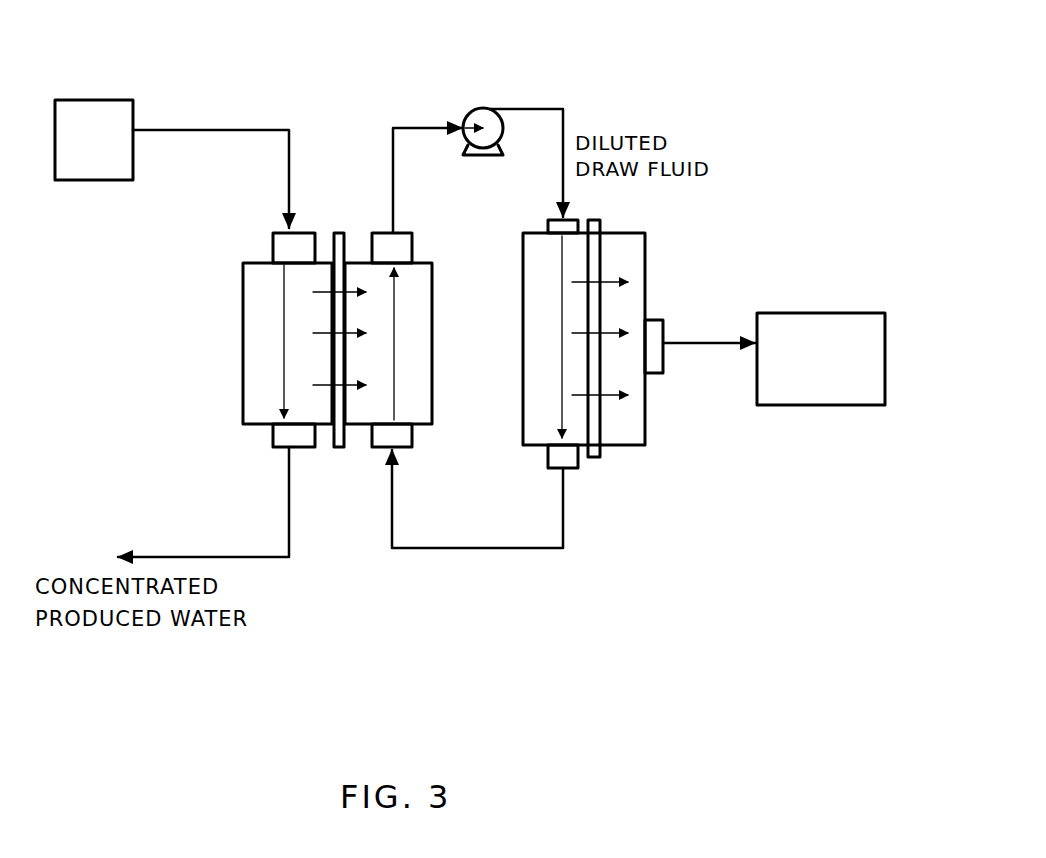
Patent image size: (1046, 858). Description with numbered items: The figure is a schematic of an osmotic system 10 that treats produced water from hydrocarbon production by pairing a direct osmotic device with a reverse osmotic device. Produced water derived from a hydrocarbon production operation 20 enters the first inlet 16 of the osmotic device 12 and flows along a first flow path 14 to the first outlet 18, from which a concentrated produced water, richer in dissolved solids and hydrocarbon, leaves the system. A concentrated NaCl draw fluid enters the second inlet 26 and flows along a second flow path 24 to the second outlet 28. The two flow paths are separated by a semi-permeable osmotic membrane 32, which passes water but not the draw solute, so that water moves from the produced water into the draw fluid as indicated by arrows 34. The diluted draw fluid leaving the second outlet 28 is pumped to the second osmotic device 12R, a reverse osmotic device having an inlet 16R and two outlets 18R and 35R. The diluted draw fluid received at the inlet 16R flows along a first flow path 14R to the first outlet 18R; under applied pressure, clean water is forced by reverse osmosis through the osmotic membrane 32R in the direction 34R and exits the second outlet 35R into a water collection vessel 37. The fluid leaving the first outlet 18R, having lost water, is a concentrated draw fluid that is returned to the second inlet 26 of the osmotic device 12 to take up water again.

The osmotic system 10 is at (705, 75).
The osmotic device 12 is at (242, 328).
The first flow path 14 is at (283, 347).
The first inlet 16 is at (272, 243).
The first outlet 18 is at (270, 449).
The hydrocarbon production operation 20 is at (94, 140).
The second flow path 24 is at (393, 382).
The second inlet 26 is at (412, 448).
The second outlet 28 is at (413, 244).
The osmotic membrane 32 is at (336, 228).
The arrows 34 is at (350, 335).
The second osmotic device 12R is at (648, 290).
The first flow path 14R is at (562, 300).
The inlet 16R is at (579, 228).
The first outlet 18R is at (578, 468).
The osmotic membrane 32R is at (602, 224).
The direction 34R is at (612, 280).
The second outlet 35R is at (660, 376).
The water collection vessel 37 is at (793, 405).